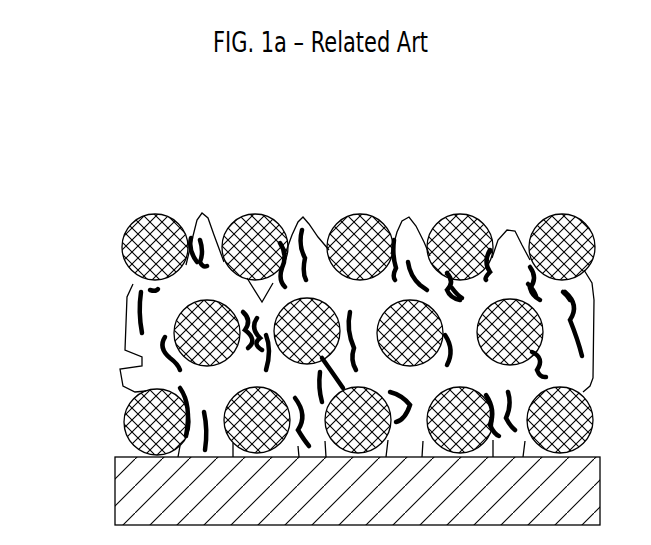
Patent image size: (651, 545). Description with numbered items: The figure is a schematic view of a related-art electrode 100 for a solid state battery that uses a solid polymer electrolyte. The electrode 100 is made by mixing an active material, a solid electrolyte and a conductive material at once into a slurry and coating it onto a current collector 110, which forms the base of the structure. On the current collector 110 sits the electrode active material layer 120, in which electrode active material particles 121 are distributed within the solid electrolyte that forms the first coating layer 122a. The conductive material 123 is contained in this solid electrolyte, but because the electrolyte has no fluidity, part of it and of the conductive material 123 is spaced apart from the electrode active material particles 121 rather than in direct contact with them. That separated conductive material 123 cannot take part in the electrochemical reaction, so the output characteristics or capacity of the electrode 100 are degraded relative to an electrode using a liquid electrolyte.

The electrode 100 is at (162, 127).
The current collector 110 is at (125, 492).
The electrode active material layer 120 is at (86, 322).
The electrode active material particles 121 is at (153, 215).
The first coating layer 122a is at (204, 222).
The conductive material 123 is at (300, 228).